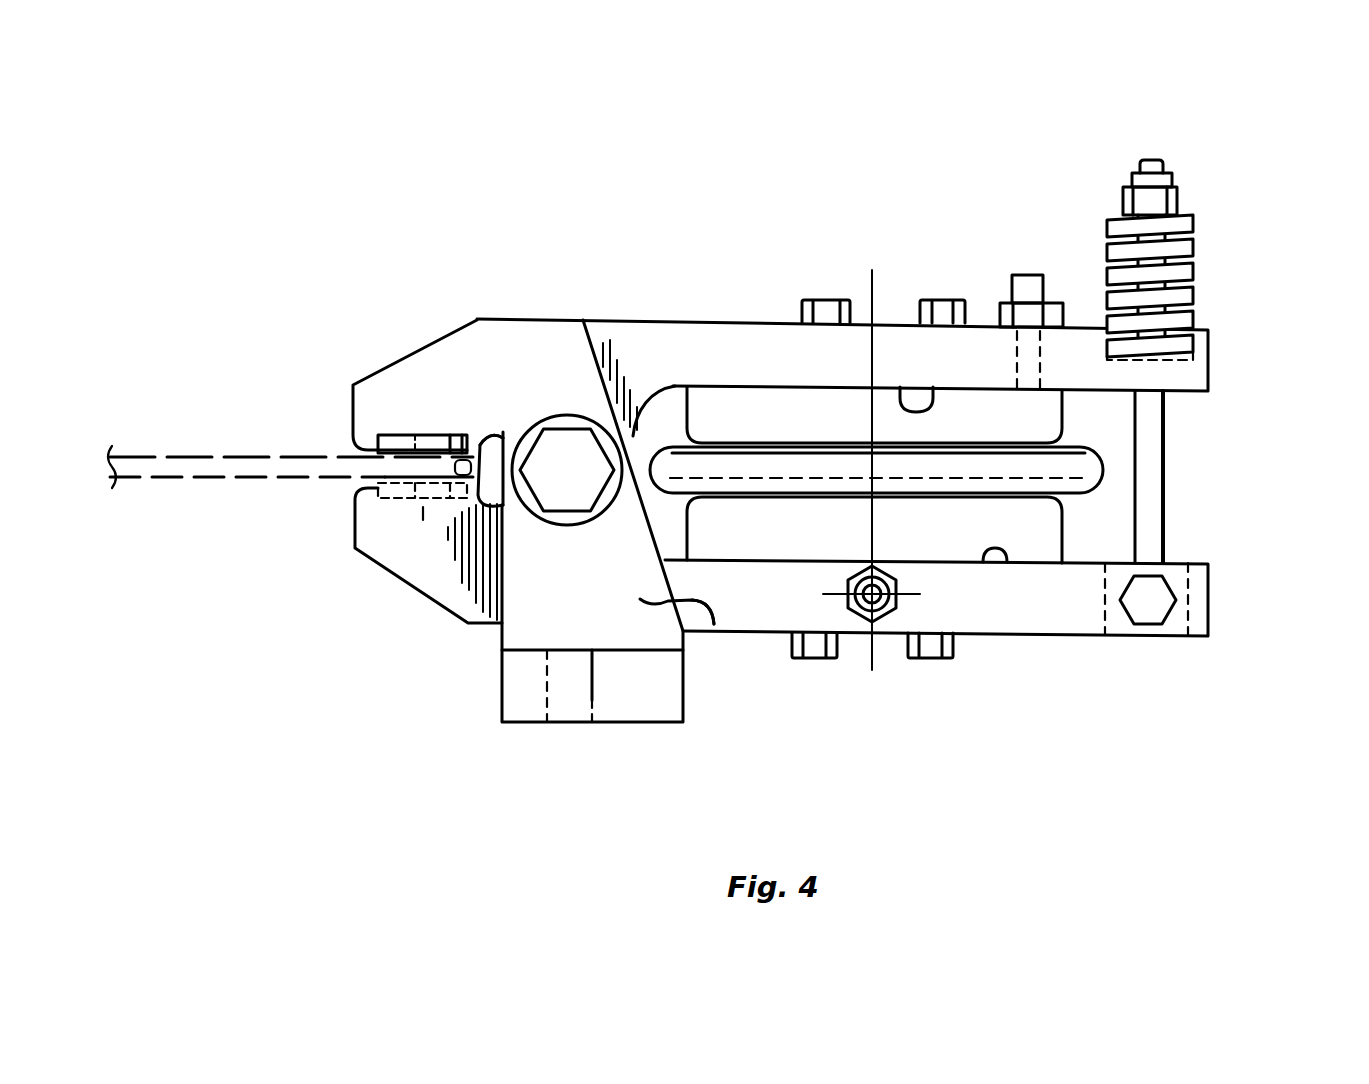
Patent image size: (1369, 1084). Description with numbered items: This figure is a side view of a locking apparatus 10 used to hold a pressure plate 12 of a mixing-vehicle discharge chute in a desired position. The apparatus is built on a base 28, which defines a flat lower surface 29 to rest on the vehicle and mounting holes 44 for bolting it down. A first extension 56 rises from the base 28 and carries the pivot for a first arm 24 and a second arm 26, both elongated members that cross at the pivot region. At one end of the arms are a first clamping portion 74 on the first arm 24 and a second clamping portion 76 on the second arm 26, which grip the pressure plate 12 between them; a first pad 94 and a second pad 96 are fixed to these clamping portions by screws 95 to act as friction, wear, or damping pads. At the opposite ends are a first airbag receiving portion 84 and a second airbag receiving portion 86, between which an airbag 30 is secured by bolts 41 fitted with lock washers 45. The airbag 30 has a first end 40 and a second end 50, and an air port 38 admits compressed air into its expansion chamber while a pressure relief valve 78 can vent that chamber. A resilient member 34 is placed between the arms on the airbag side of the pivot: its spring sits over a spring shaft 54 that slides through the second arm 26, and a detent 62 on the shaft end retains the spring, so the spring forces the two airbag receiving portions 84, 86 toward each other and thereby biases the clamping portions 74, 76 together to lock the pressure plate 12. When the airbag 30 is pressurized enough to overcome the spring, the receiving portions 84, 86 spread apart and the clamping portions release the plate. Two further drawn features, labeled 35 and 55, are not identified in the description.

The locking apparatus 10 is at (800, 240).
The pressure plate 12 is at (227, 453).
The first arm 24 is at (1213, 377).
The second arm 26 is at (1207, 590).
The base 28 is at (533, 600).
The flat lower surface 29 is at (522, 722).
The airbag 30 is at (1103, 470).
The resilient member 34 is at (1200, 257).
The pivot bolt 35 is at (568, 458).
The air port 38 is at (875, 627).
The first end 40 is at (760, 387).
The bolts 41 is at (960, 703).
The mounting holes 44 is at (593, 683).
The lock washers 45 is at (428, 437).
The second end 50 is at (777, 560).
The spring shaft 54 is at (1163, 520).
The washer 55 is at (1220, 342).
The first extension 56 is at (714, 624).
The detent 62 is at (1189, 166).
The first clamping portion 74 is at (390, 475).
The second clamping portion 76 is at (500, 433).
The pressure relief valve 78 is at (1032, 275).
The first airbag receiving portion 84 is at (902, 387).
The second airbag receiving portion 86 is at (1007, 563).
The first pad 94 is at (377, 487).
The screws 95 is at (423, 507).
The second pad 96 is at (377, 450).